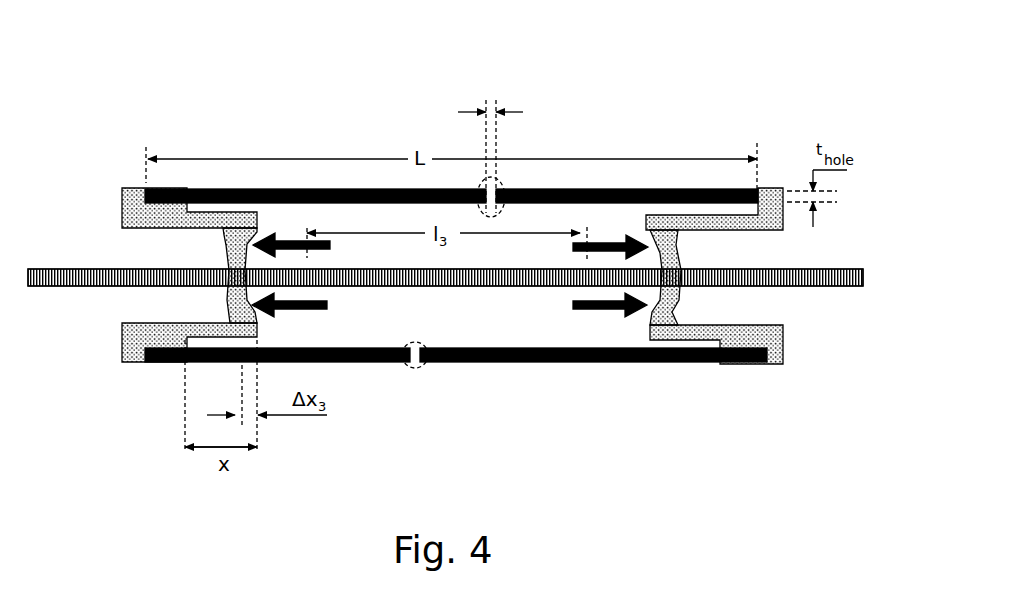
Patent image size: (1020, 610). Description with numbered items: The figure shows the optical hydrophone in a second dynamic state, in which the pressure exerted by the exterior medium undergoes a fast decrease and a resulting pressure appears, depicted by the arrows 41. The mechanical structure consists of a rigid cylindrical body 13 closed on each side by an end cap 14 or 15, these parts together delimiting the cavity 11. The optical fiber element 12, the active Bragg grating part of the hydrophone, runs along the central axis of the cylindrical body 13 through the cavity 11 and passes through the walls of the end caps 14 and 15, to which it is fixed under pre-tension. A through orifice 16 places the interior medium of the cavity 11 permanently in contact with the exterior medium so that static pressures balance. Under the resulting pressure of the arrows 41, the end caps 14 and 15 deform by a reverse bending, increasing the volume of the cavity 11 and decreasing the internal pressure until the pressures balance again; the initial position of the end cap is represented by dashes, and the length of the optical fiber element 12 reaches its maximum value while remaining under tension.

The cavity 11 is at (456, 400).
The optical fiber element 12 is at (445, 361).
The cylindrical body 13 is at (451, 148).
The end cap 14 is at (164, 332).
The end cap 15 is at (736, 324).
The through orifice 16 is at (497, 151).
The arrows 41 is at (458, 327).